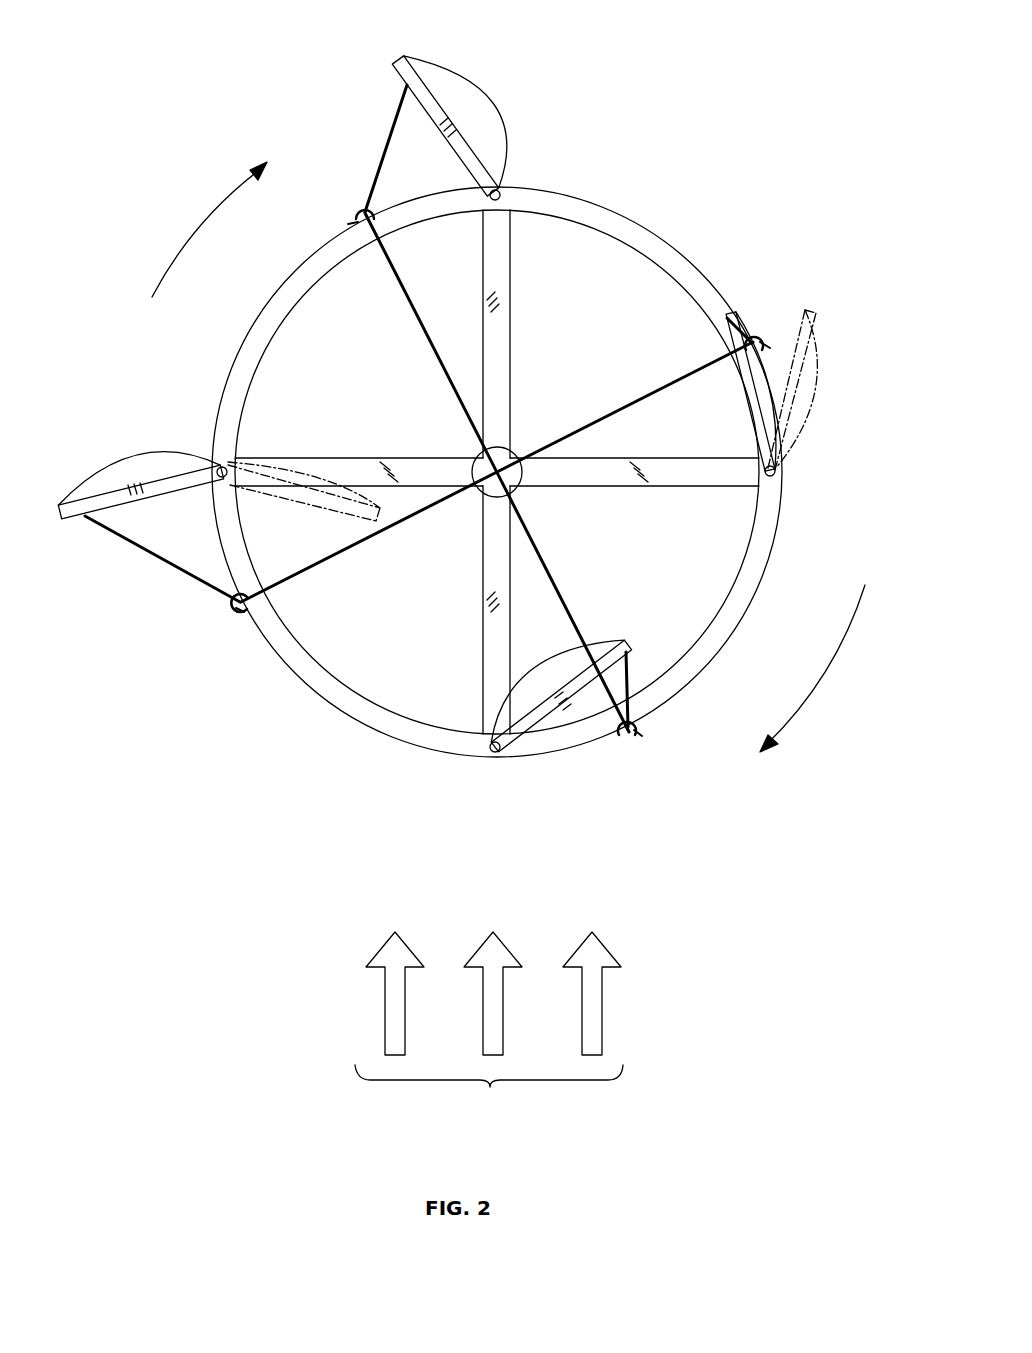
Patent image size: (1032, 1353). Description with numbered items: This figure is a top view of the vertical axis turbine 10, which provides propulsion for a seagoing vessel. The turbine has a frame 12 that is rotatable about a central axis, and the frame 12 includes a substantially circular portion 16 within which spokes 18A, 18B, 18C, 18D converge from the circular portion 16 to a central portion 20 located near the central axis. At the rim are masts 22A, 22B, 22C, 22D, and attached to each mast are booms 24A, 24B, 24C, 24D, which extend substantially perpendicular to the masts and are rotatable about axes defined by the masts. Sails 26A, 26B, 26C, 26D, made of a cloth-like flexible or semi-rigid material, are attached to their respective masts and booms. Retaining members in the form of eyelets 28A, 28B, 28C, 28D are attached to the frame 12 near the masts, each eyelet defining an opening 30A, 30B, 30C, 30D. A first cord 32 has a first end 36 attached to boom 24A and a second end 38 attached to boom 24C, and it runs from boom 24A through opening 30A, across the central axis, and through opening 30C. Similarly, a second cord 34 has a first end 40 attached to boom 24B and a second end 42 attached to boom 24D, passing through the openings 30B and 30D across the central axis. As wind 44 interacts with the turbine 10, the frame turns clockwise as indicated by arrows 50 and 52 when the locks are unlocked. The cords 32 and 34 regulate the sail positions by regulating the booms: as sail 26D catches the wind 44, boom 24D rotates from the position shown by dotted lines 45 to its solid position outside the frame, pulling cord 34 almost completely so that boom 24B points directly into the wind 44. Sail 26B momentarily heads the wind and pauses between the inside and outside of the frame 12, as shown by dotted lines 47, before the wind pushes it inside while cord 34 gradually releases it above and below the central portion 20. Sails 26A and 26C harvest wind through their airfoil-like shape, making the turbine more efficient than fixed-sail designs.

The vertical axis turbine 10 is at (760, 60).
The frame 12 is at (598, 186).
The substantially circular portion 16 is at (620, 215).
The spoke 18A is at (508, 270).
The spoke 18B is at (656, 460).
The spoke 18C is at (482, 640).
The spoke 18D is at (410, 456).
The central portion 20 is at (492, 505).
The mast 22A is at (502, 192).
The mast 22B is at (778, 470).
The mast 22C is at (495, 758).
The mast 22D is at (222, 472).
The boom 24A is at (400, 57).
The boom 24B is at (726, 330).
The boom 24C is at (626, 640).
The boom 24D is at (82, 520).
The sail 26A is at (445, 95).
The sail 26B is at (812, 378).
The sail 26C is at (560, 657).
The sail 26D is at (142, 456).
The eyelet 28A is at (355, 222).
The eyelet 28B is at (772, 345).
The eyelet 28C is at (640, 736).
The eyelet 28D is at (240, 615).
The opening 30A is at (360, 202).
The opening 30B is at (757, 330).
The opening 30C is at (622, 745).
The opening 30D is at (232, 610).
The first cord 32 is at (410, 300).
The second cord 34 is at (612, 405).
The first end 36 is at (385, 130).
The second end 38 is at (638, 656).
The first end 40 is at (744, 322).
The second end 42 is at (142, 566).
The wind 44 is at (489, 1022).
The dotted lines 45 is at (350, 520).
The dotted lines 47 is at (820, 340).
The arrow 50 is at (207, 215).
The arrow 52 is at (850, 665).